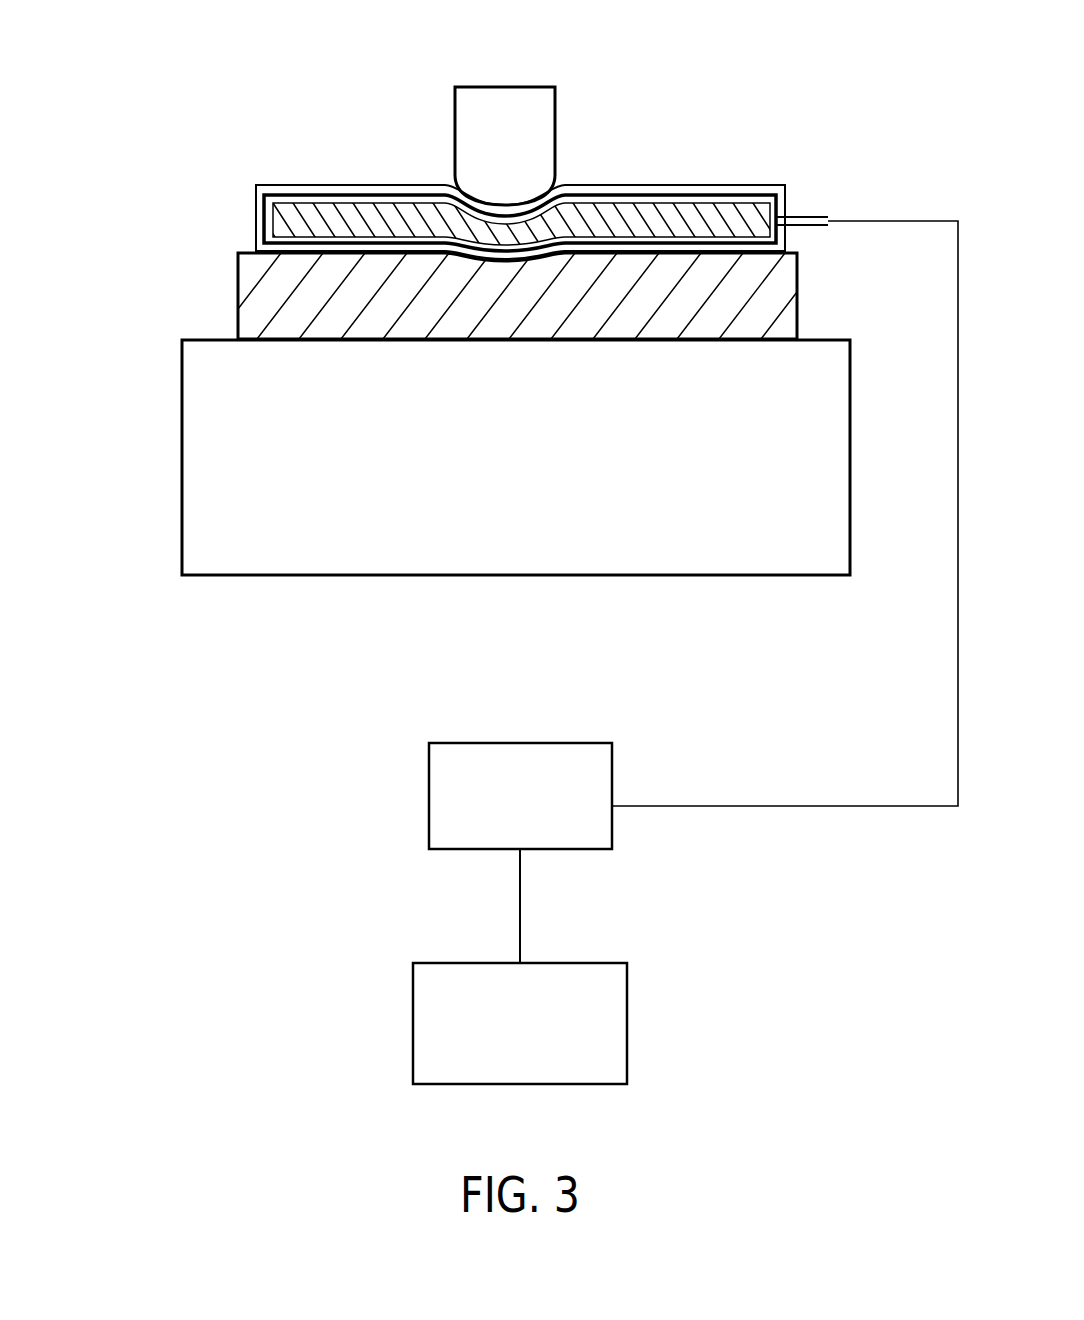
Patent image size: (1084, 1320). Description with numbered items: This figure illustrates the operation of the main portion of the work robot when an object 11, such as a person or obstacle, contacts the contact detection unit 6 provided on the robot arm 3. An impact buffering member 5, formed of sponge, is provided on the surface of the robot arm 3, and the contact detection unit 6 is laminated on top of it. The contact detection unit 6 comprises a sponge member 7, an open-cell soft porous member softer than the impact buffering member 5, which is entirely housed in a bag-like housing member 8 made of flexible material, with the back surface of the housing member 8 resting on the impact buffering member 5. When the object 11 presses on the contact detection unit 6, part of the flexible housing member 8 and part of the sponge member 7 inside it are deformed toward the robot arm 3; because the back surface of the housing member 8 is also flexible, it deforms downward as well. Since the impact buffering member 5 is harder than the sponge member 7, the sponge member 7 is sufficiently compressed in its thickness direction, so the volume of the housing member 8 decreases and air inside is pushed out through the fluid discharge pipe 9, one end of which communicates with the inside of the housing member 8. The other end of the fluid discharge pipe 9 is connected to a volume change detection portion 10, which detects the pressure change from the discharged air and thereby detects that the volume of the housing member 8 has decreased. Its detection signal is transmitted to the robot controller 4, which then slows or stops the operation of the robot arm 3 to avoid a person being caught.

The robot arm 3 is at (203, 488).
The robot controller 4 is at (413, 1034).
The impact buffering member 5 is at (240, 300).
The contact detection unit 6 is at (317, 157).
The sponge member 7 is at (698, 220).
The housing member 8 is at (620, 183).
The fluid discharge pipe 9 is at (805, 217).
The volume change detection portion 10 is at (429, 800).
The object 11 is at (547, 92).